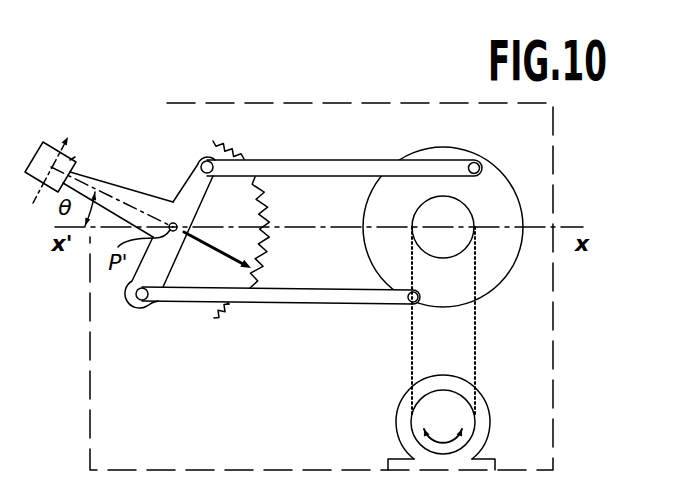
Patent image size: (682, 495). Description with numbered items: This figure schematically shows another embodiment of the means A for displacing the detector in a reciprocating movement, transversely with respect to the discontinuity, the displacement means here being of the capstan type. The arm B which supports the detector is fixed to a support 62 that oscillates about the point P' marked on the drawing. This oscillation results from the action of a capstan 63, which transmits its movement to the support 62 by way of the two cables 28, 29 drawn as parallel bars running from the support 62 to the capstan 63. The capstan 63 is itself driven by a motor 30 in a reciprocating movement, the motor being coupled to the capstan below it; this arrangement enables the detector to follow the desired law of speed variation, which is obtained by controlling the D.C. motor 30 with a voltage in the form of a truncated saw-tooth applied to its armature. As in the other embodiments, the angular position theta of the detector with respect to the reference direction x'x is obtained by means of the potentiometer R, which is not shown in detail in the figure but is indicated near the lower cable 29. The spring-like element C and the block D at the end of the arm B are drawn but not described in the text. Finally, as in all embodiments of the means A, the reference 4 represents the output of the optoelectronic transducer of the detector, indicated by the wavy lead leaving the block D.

The output of the optoelectronic transducer 4 is at (75, 157).
The cable 28 is at (317, 161).
The cable 29 is at (317, 297).
The motor 30 is at (499, 396).
The support 62 is at (188, 192).
The capstan 63 is at (498, 175).
The means for displacing the detector A is at (443, 103).
The arm B is at (110, 184).
The spring C is at (240, 250).
The block D is at (44, 147).
The potentiometer R is at (214, 313).